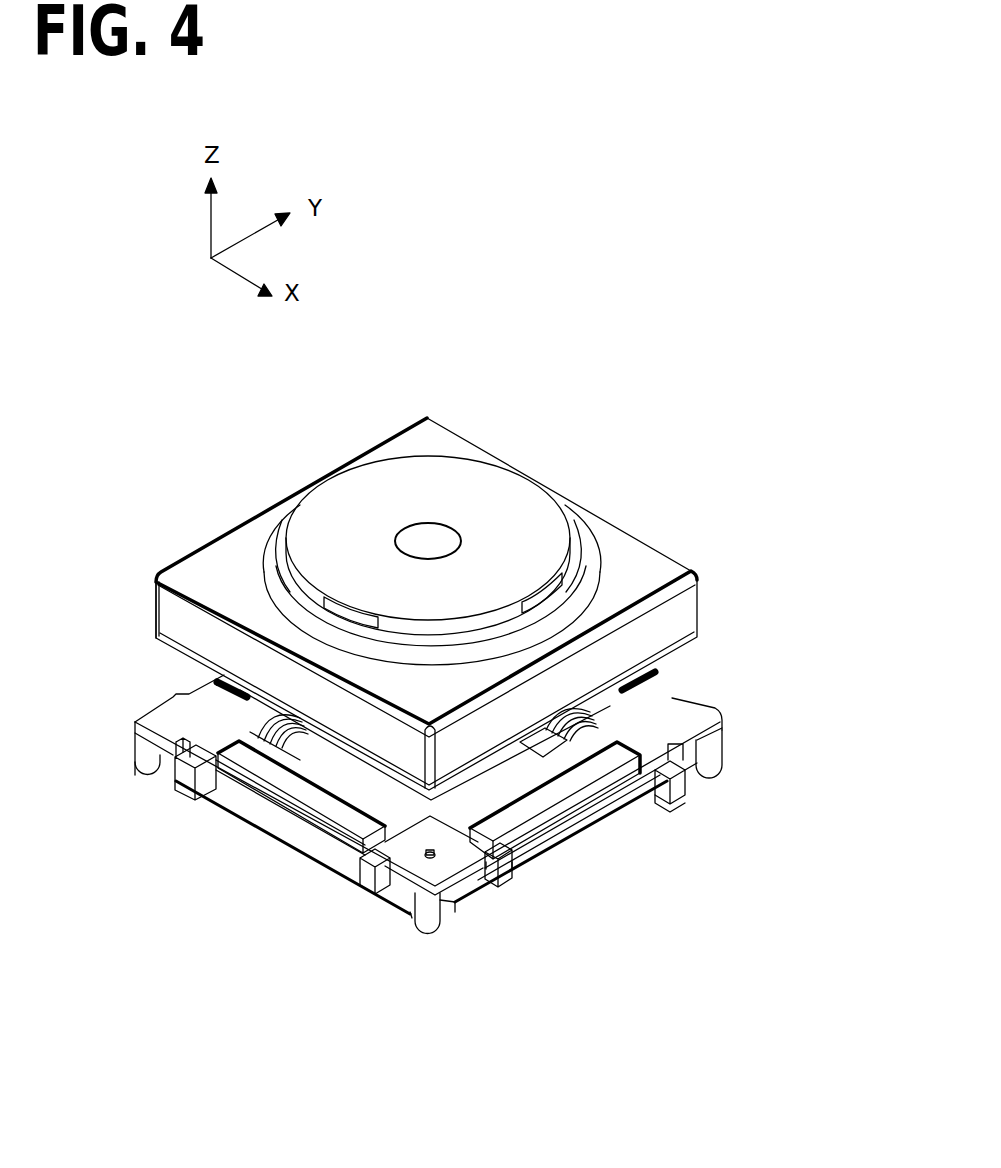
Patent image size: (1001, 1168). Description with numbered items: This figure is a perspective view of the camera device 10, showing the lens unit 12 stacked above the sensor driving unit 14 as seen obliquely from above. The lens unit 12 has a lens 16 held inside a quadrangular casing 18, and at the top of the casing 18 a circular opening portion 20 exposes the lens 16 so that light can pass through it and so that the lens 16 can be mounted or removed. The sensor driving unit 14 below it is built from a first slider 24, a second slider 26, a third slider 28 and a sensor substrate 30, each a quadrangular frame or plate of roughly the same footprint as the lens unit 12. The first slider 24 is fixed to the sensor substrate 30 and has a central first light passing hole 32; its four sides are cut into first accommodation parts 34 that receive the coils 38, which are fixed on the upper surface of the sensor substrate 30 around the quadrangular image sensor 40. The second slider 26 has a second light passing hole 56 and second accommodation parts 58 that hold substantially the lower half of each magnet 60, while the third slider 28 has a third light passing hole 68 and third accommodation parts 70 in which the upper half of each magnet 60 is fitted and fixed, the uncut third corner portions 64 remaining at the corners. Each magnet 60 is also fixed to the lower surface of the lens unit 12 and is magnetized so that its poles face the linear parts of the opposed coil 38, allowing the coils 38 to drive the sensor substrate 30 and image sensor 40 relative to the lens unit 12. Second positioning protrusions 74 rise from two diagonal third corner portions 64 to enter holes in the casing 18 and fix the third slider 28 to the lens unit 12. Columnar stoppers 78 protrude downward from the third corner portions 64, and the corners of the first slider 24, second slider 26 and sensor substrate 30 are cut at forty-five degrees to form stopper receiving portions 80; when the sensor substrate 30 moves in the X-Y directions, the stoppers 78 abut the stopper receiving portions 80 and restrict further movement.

The camera device 10 is at (713, 486).
The lens unit 12 is at (593, 507).
The sensor driving unit 14 is at (706, 700).
The lens 16 is at (484, 476).
The casing 18 is at (222, 553).
The opening portion 20 is at (279, 533).
The first slider 24 is at (657, 789).
The second slider 26 is at (671, 775).
The third slider 28 is at (689, 693).
The sensor substrate 30 is at (484, 894).
The first light passing hole 32 is at (560, 733).
The first accommodation part 34 is at (203, 783).
The coil 38 is at (270, 830).
The image sensor 40 is at (273, 733).
The second light passing hole 56 is at (574, 716).
The second accommodation part 58 is at (198, 762).
The magnet 60 is at (594, 758).
The third corner portion 64 is at (162, 712).
The third light passing hole 68 is at (664, 700).
The third accommodation part 70 is at (230, 747).
The second positioning protrusion 74 is at (432, 851).
The stopper 78 is at (142, 763).
The stopper receiving portion 80 is at (683, 771).